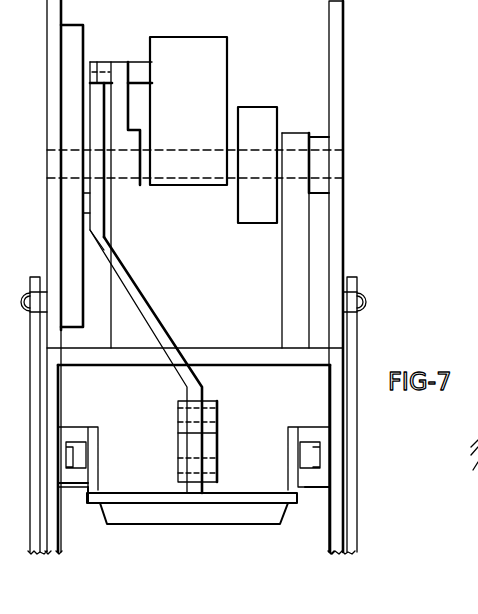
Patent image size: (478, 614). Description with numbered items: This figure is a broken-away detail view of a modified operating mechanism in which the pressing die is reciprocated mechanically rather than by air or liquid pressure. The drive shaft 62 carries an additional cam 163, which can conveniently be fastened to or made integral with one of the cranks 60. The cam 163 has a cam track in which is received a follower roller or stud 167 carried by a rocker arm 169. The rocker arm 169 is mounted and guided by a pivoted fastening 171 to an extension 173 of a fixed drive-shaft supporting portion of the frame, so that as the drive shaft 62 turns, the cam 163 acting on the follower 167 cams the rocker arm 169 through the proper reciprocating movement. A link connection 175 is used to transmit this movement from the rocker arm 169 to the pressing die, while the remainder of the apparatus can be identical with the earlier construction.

The crank 60 is at (47, 222).
The drive shaft 62 is at (233, 182).
The cam 163 is at (85, 38).
The follower roller or stud 167 is at (89, 233).
The rocker arm 169 is at (167, 297).
The pivoted fastening 171 is at (107, 62).
The extension 173 is at (120, 109).
The link connection 175 is at (217, 435).